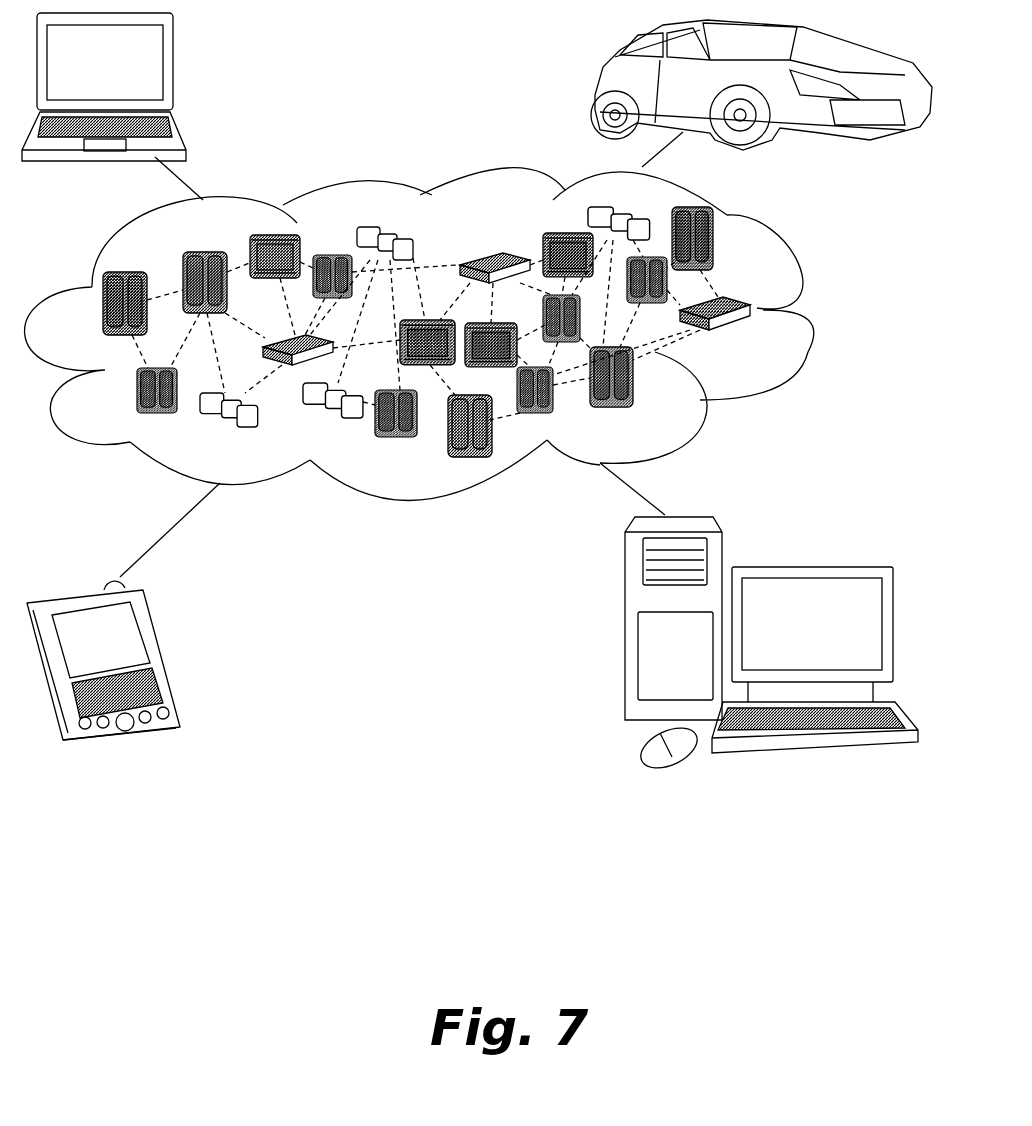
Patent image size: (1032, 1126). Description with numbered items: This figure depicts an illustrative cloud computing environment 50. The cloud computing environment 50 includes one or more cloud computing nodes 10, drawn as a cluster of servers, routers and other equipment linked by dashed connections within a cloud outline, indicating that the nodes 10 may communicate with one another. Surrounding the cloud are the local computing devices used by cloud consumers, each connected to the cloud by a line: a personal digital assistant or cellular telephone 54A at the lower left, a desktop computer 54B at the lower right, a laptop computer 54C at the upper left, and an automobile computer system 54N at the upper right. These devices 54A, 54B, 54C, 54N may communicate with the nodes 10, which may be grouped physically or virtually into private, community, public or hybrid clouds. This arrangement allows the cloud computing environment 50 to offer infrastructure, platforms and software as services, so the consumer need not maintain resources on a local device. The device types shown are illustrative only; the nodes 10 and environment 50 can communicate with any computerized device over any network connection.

The cloud computing node 10 is at (752, 339).
The cloud computing environment 50 is at (810, 311).
The personal digital assistant or cellular telephone 54A is at (165, 648).
The desktop computer 54B is at (808, 567).
The laptop computer 54C is at (176, 68).
The automobile computer system 54N is at (595, 88).